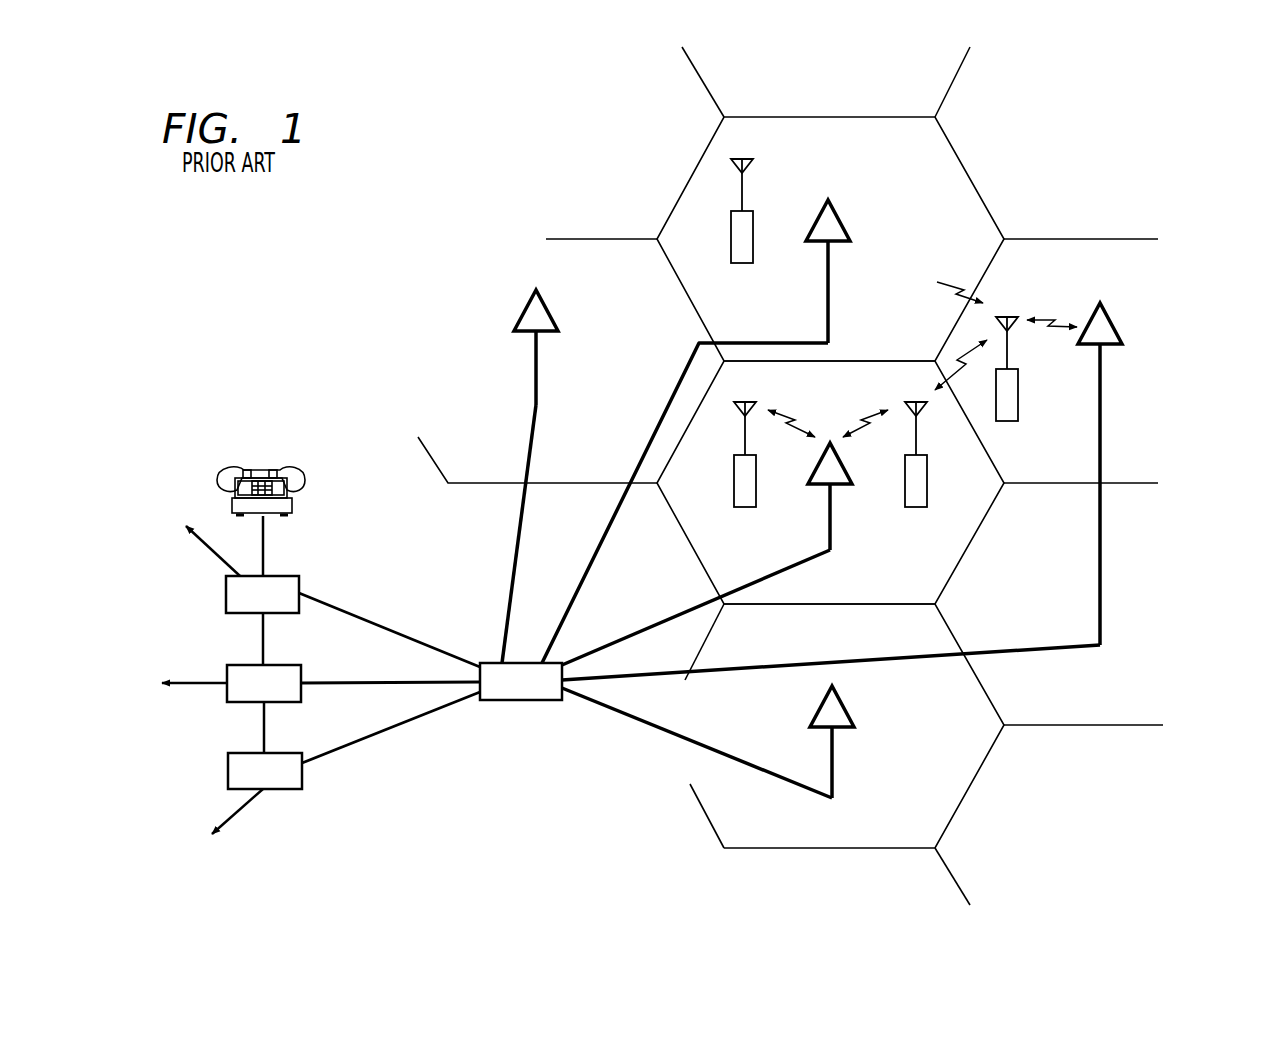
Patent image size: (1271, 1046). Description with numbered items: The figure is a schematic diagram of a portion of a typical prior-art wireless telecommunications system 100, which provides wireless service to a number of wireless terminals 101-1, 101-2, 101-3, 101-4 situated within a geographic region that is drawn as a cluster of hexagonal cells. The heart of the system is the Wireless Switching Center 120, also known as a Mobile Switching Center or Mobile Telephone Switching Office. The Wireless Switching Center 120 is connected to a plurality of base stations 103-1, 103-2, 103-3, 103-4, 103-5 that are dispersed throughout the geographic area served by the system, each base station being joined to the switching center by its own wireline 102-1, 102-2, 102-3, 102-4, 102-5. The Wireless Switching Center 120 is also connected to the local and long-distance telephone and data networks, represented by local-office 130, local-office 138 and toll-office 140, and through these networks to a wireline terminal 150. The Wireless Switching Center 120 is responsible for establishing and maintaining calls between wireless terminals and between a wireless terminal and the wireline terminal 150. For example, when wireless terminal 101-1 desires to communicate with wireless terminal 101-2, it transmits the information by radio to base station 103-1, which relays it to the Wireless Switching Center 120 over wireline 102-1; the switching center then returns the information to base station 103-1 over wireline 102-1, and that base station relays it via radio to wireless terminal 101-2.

The wireless telecommunications system 100 is at (247, 233).
The wireless terminal 101-1 is at (745, 507).
The wireless terminal 101-2 is at (916, 507).
The wireless terminal 101-3 is at (742, 263).
The wireless terminal 101-4 is at (1048, 420).
The wireline 102-1 is at (647, 627).
The wireline 102-2 is at (600, 538).
The wireline 102-3 is at (508, 605).
The wireline 102-4 is at (647, 677).
The wireline 102-5 is at (633, 718).
The base station 103-1 is at (830, 530).
The base station 103-2 is at (828, 277).
The base station 103-3 is at (537, 372).
The base station 103-4 is at (1101, 398).
The base station 103-5 is at (832, 770).
The Wireless Switching Center 120 is at (523, 700).
The local-office 130 is at (226, 592).
The local-office 138 is at (228, 770).
The toll-office 140 is at (227, 670).
The wireline terminal 150 is at (263, 463).